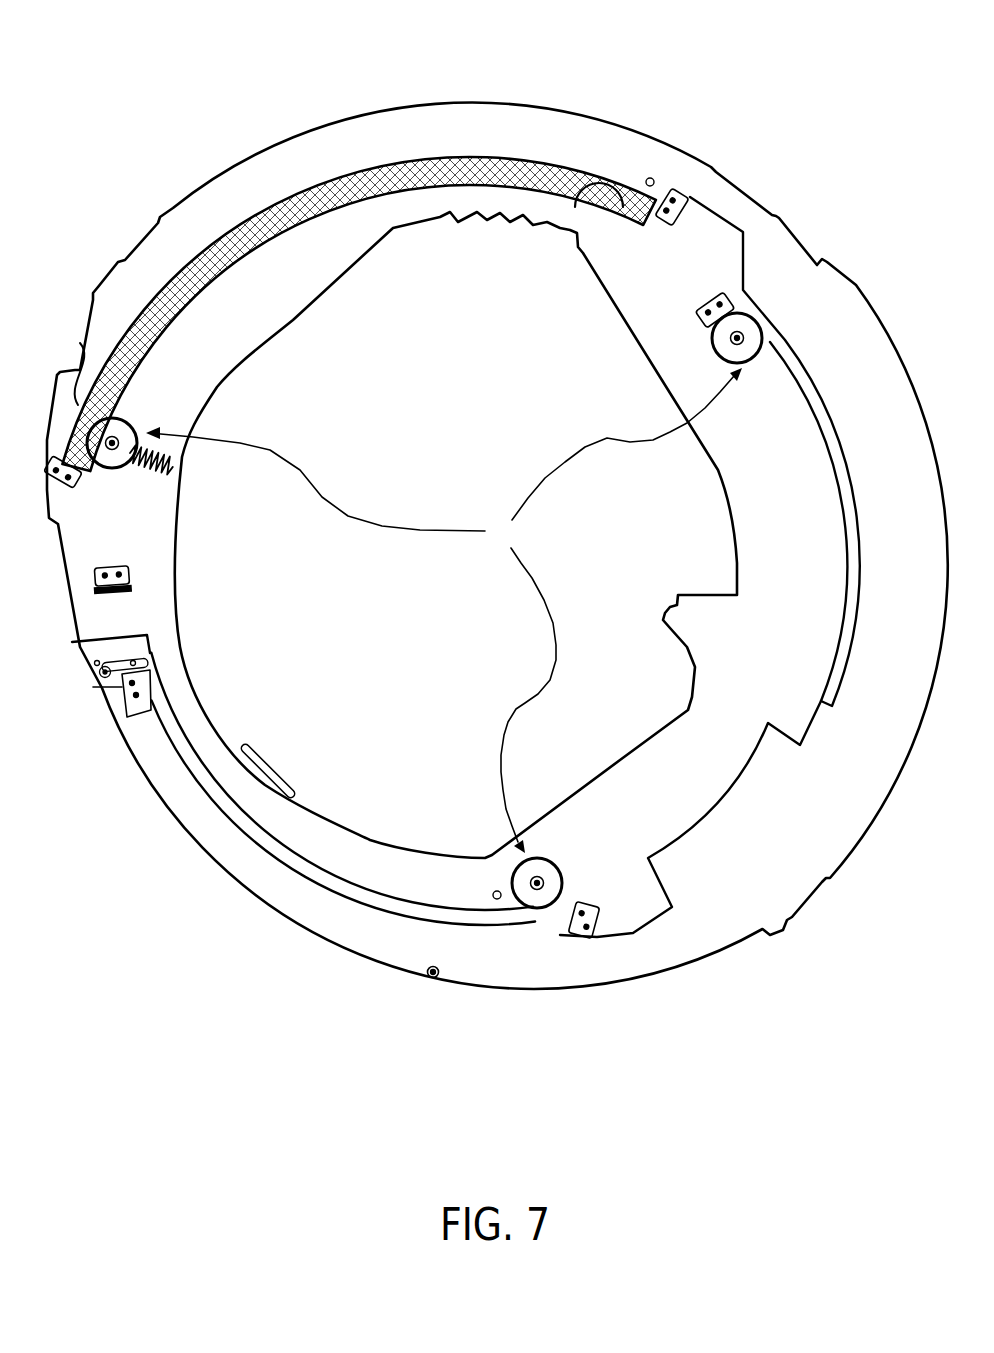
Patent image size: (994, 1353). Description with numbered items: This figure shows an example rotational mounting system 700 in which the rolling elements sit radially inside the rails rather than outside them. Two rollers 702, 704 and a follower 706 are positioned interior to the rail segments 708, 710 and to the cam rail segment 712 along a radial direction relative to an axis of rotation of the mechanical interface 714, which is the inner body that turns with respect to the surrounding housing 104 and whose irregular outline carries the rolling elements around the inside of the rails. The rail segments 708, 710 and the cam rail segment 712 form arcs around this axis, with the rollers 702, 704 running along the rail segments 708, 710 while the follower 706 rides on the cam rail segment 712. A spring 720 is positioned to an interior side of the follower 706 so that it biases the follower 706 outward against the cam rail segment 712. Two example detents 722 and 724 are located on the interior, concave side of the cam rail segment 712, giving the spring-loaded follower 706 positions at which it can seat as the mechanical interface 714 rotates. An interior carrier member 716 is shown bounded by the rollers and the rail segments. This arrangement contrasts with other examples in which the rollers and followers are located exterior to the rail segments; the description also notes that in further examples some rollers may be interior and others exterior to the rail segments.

The rotational mounting system 700 is at (831, 47).
The housing 104 is at (852, 288).
The roller 702 is at (716, 352).
The roller 704 is at (527, 907).
The follower 706 is at (130, 465).
The rail segment 708 is at (839, 433).
The rail segment 710 is at (243, 843).
The cam rail segment 712 is at (217, 240).
The mechanical interface 714 is at (444, 610).
The inner carrier 716 is at (613, 302).
The spring 720 is at (183, 470).
The detent 722 is at (80, 345).
The detent 724 is at (590, 212).